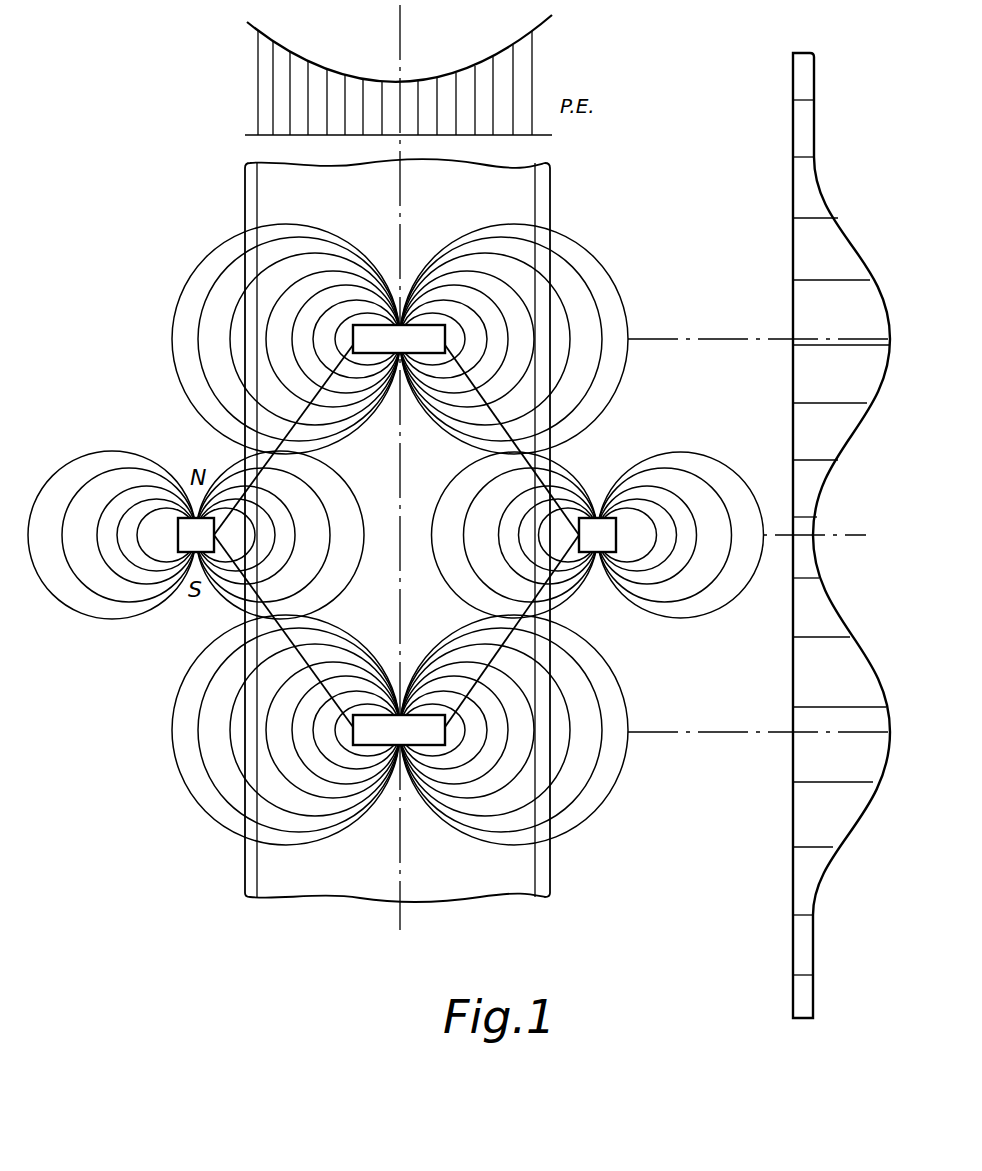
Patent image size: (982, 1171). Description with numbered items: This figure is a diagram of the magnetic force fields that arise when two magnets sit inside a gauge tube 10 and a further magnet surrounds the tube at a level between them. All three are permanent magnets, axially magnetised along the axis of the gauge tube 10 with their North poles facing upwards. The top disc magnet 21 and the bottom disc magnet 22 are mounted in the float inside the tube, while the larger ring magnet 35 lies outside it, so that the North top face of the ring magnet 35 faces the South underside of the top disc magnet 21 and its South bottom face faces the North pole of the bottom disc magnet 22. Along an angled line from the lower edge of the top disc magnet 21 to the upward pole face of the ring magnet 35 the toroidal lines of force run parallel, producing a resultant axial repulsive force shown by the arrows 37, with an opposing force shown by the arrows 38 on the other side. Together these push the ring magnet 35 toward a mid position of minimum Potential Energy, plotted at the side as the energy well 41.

The gauge tube 10 is at (544, 198).
The top disc magnet 21 is at (358, 328).
The bottom disc magnet 22 is at (432, 735).
The ring magnet 35 is at (612, 542).
The arrows indicating resultant repulsive force 37 is at (472, 443).
The arrows indicating resultant repulsive force 38 is at (480, 677).
The energy well 41 is at (869, 517).